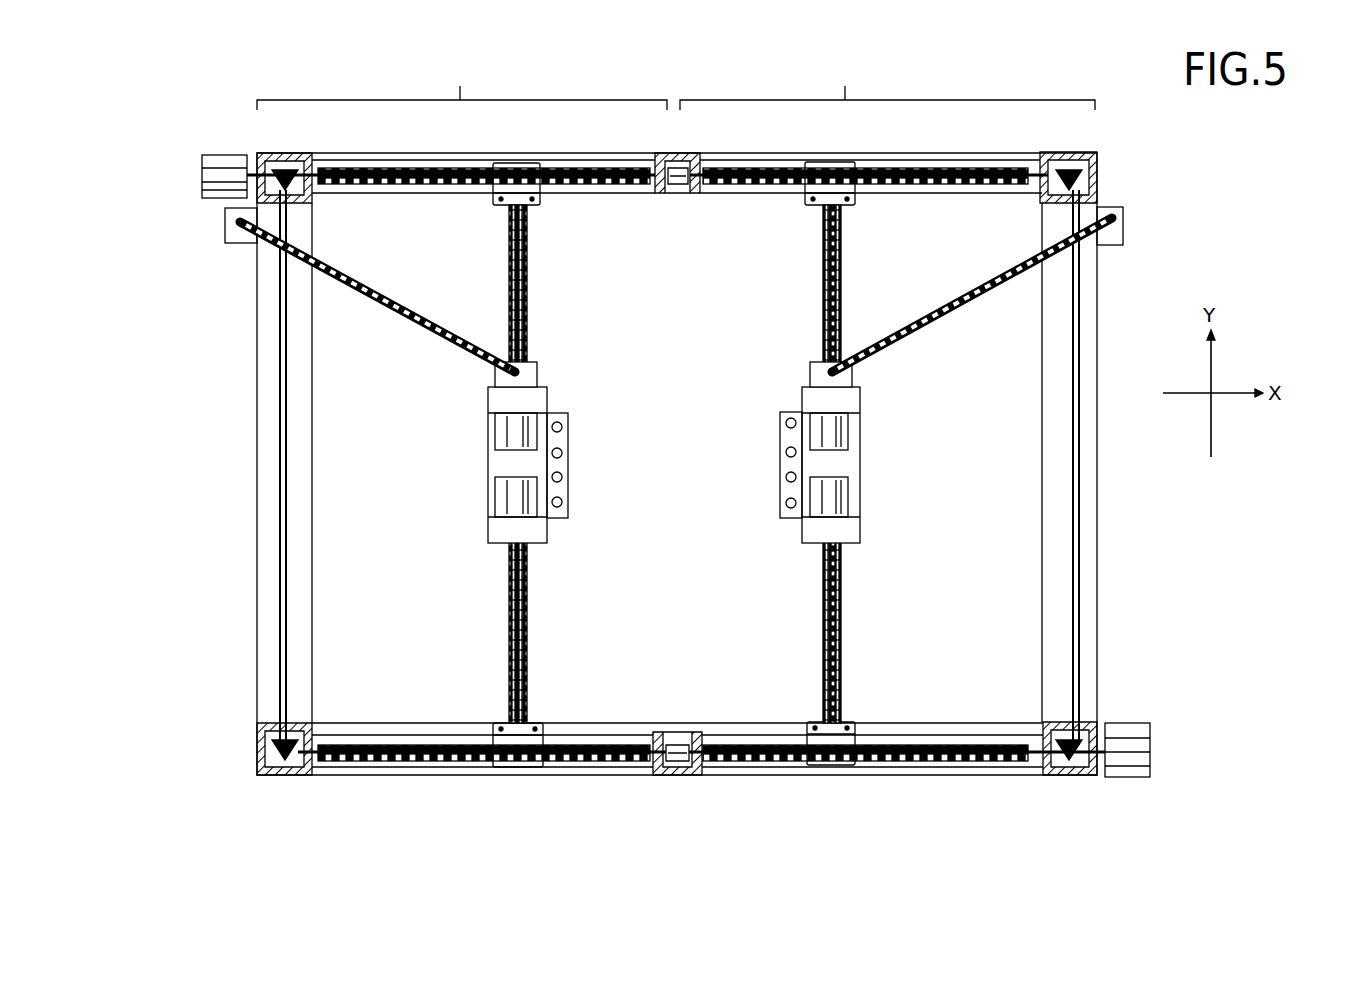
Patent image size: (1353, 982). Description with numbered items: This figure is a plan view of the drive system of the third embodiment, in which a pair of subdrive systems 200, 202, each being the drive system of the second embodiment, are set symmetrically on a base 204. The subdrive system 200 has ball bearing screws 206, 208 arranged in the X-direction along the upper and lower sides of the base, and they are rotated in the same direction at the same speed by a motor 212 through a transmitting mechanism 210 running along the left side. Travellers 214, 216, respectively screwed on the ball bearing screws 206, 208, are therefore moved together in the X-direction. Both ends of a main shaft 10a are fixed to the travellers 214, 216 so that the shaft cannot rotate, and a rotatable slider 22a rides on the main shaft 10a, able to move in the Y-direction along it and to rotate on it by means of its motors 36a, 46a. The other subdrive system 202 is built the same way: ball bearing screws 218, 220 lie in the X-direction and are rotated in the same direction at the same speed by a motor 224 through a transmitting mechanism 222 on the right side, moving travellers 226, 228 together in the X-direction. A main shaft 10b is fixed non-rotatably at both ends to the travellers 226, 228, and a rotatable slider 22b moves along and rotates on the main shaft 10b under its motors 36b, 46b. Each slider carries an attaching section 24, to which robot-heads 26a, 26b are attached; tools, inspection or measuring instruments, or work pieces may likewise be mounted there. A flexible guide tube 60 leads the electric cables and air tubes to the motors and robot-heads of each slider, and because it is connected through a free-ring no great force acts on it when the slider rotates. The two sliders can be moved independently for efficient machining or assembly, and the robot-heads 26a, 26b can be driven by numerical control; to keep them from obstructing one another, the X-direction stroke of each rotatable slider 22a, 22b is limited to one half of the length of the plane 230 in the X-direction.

The subdrive system 200 is at (462, 81).
The subdrive system 202 is at (887, 81).
The base 204 is at (1098, 668).
The ball bearing screw 206 is at (378, 165).
The ball bearing screw 208 is at (405, 767).
The transmitting mechanism 210 is at (282, 548).
The motor 212 is at (205, 162).
The traveller 214 is at (527, 180).
The traveller 216 is at (520, 770).
The ball bearing screw 218 is at (975, 170).
The ball bearing screw 220 is at (945, 767).
The transmitting mechanism 222 is at (1080, 590).
The motor 224 is at (1150, 760).
The traveller 226 is at (830, 175).
The traveller 228 is at (825, 765).
The plane 230 is at (692, 253).
The flexible guide tube 60 is at (337, 287).
The main shaft 10a is at (528, 660).
The main shaft 10b is at (845, 660).
The rotatable slider 22a is at (580, 480).
The rotatable slider 22b is at (847, 470).
The attaching section 24 is at (568, 470).
The robot-head 26a is at (563, 426).
The robot-head 26b is at (790, 425).
The motor 36a is at (505, 497).
The motor 36b is at (850, 430).
The motor 46a is at (497, 430).
The motor 46b is at (850, 490).